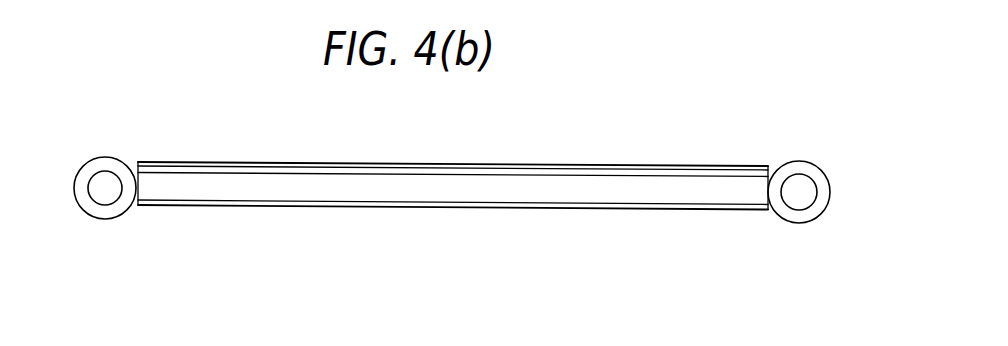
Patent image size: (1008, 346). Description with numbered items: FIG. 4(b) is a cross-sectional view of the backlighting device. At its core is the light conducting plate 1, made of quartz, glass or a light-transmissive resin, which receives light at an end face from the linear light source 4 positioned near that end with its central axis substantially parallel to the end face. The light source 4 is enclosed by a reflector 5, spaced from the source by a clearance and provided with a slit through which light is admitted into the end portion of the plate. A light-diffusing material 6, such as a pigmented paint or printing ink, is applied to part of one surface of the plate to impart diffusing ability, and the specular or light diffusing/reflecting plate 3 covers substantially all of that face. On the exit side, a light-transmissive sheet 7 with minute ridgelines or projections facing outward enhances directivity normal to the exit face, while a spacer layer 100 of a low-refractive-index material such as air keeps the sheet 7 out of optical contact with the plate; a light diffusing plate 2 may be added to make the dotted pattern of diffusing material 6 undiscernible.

The layer of low-refractive-index material 100 is at (137, 163).
The light conducting plate 1 is at (613, 182).
The light diffusing plate 2 is at (407, 168).
The specular or light diffusing/reflecting plate 3 is at (451, 208).
The linear light source 4 is at (102, 180).
The reflector 5 is at (90, 219).
The light-diffusing material 6 is at (639, 209).
The sheet 7 is at (461, 165).